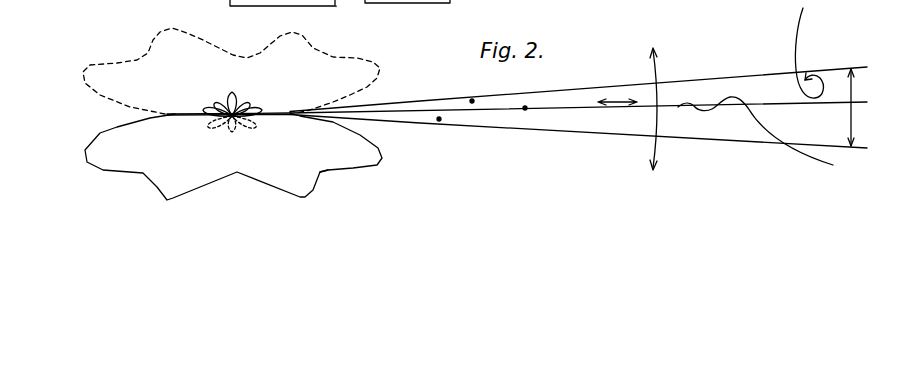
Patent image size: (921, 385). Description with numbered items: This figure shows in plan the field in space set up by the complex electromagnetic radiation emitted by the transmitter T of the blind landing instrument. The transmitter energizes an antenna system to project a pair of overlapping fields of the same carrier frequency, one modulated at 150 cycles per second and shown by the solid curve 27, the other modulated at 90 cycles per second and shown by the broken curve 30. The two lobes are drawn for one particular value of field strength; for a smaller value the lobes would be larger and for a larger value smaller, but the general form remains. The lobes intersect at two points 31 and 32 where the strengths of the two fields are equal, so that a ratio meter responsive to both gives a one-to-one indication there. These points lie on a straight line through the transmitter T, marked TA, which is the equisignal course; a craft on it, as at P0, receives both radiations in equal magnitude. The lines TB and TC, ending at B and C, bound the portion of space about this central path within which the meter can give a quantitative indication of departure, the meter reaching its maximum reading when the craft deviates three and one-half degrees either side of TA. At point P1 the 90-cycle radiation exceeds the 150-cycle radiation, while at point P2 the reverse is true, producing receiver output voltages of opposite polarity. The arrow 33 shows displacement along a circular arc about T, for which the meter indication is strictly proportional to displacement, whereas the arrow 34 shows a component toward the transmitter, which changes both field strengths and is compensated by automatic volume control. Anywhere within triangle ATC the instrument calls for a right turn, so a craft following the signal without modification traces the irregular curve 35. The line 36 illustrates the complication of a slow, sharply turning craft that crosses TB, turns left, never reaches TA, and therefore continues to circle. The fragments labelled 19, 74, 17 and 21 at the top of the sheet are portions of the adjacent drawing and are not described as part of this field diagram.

The component (FIG.1 fragment) 19 is at (229, 3).
The component (FIG.1 fragment) 74 is at (340, 2).
The component (FIG.1 fragment) 17 is at (450, 3).
The component (FIG.1 fragment) 21 is at (590, 0).
The broken curve 30 is at (223, 50).
The 90-cycle modulation 90 is at (381, 68).
The 150-cycle modulation 150 is at (382, 158).
The solid curve 27 is at (322, 171).
The point of equal field strength 31 is at (174, 115).
The point of equal field strength 32 is at (293, 115).
The transmitter T is at (228, 137).
The equisignal line endpoint A is at (584, 103).
The limit line endpoint B is at (585, 85).
The limit line endpoint C is at (583, 136).
The off-course point P1 is at (472, 101).
The on-course point P0 is at (525, 108).
The off-course point P2 is at (439, 119).
The arrow 34 is at (617, 98).
The arrow 33 is at (659, 128).
The irregular curve 35 is at (765, 129).
The line 36 is at (804, 37).